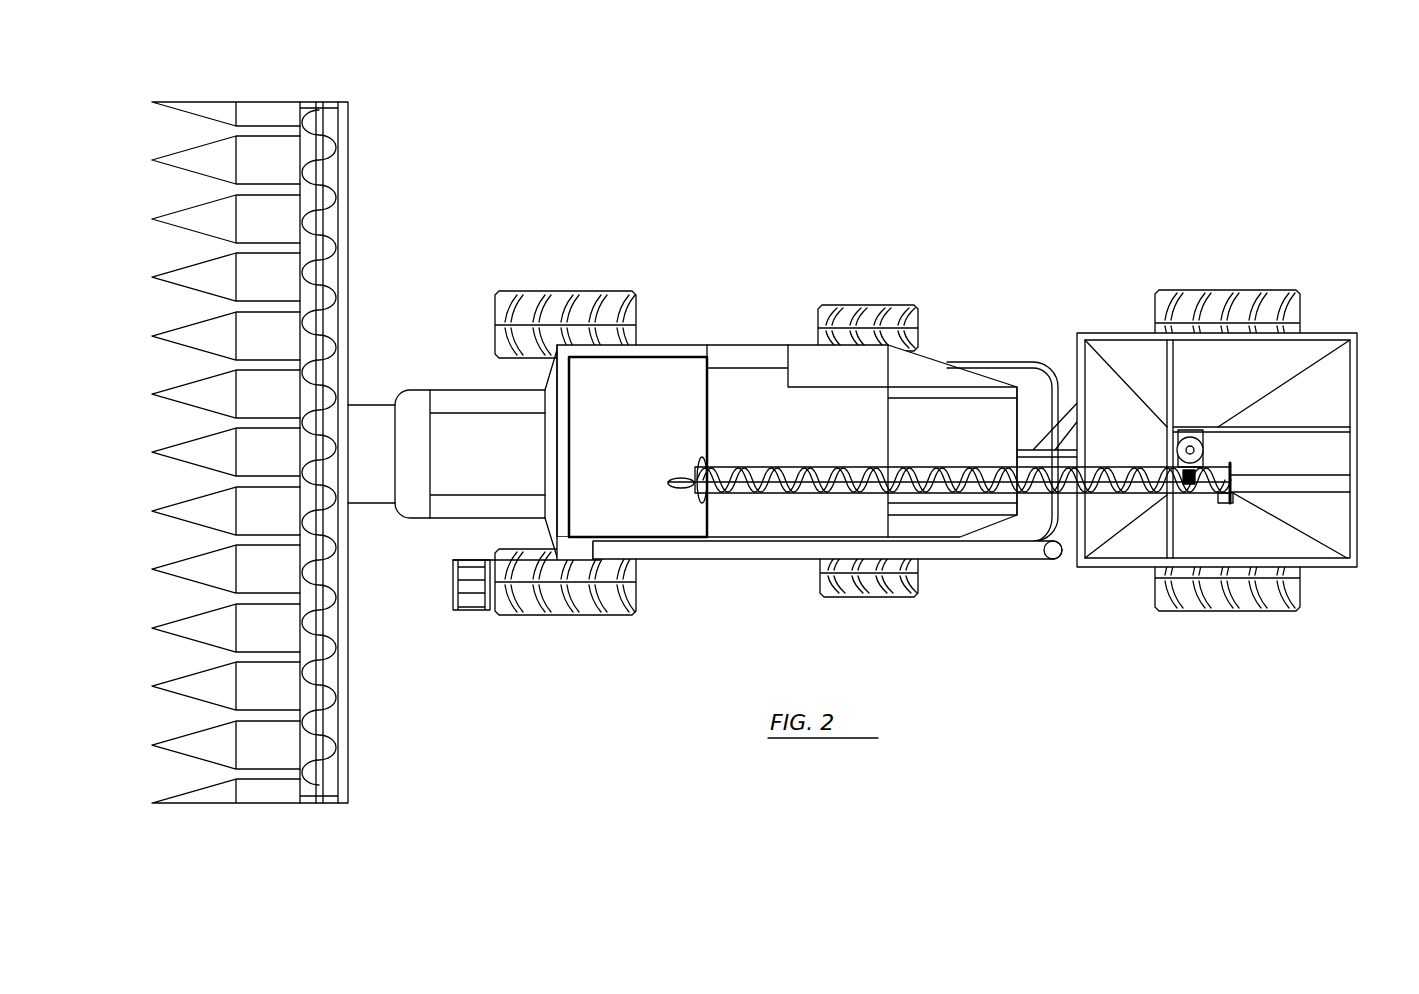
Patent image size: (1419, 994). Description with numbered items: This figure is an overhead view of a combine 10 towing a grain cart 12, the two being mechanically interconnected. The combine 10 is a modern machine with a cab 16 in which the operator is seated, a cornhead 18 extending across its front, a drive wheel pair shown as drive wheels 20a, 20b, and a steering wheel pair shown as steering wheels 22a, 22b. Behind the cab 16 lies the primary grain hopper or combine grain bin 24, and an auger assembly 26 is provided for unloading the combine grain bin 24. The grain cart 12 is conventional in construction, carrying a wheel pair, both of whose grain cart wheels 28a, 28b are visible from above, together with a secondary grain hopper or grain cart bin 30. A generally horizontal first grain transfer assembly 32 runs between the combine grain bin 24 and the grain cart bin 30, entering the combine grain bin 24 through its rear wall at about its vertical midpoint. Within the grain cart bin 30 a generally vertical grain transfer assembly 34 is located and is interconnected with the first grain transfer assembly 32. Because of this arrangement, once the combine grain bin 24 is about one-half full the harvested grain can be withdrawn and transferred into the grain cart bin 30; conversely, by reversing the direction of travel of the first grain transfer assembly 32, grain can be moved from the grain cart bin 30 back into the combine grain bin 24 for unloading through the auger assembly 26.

The combine 10 is at (772, 279).
The grain cart 12 is at (1133, 284).
The cab 16 is at (455, 390).
The cornhead 18 is at (270, 107).
The drive wheel 20a is at (557, 607).
The drive wheel 20b is at (575, 305).
The steering wheel 22a is at (862, 598).
The steering wheel 22b is at (860, 300).
The combine grain bin 24 is at (656, 357).
The auger assembly 26 is at (975, 560).
The grain cart wheel 28a is at (1217, 605).
The grain cart wheel 28b is at (1238, 300).
The grain cart bin 30 is at (1357, 440).
The first grain transfer assembly 32 is at (793, 466).
The vertical grain transfer assembly 34 is at (1193, 430).